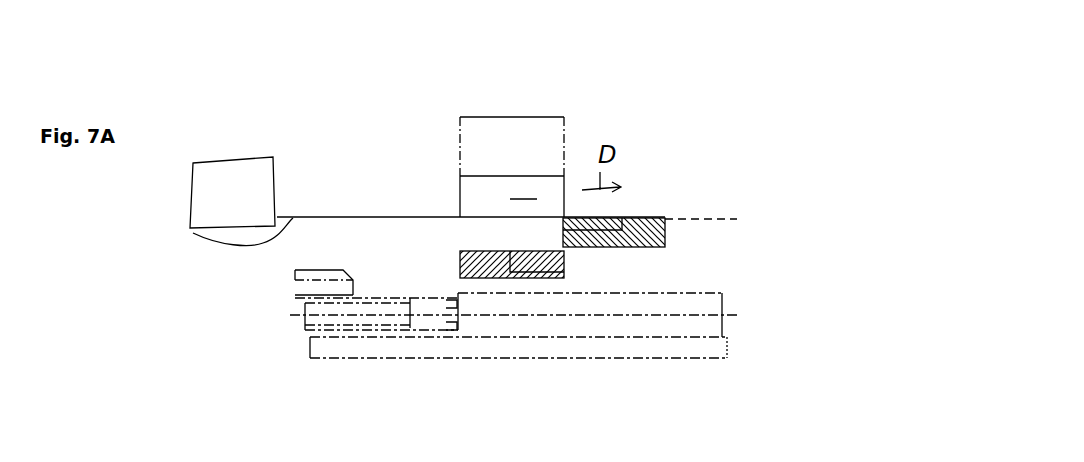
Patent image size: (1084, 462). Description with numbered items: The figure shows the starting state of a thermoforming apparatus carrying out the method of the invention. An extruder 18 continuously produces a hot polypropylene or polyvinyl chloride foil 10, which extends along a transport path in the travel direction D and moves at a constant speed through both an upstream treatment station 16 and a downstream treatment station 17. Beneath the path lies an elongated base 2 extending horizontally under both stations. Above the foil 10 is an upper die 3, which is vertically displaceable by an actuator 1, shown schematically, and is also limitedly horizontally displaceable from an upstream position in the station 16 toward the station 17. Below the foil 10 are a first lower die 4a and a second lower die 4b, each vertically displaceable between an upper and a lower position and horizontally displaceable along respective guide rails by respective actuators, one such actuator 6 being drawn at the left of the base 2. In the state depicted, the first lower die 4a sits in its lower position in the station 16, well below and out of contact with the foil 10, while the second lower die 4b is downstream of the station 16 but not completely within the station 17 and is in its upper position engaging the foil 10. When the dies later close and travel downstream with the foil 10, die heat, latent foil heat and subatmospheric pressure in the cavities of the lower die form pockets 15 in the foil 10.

The actuator 1 is at (485, 133).
The elongated base 2 is at (700, 350).
The upper die 3 is at (485, 197).
The first lower die 4a is at (460, 262).
The second lower die 4b is at (647, 218).
The actuator 6 is at (300, 275).
The foil 10 is at (447, 231).
The pockets 15 is at (732, 215).
The upstream treatment station 16 is at (522, 72).
The downstream treatment station 17 is at (698, 80).
The extruder 18 is at (219, 165).